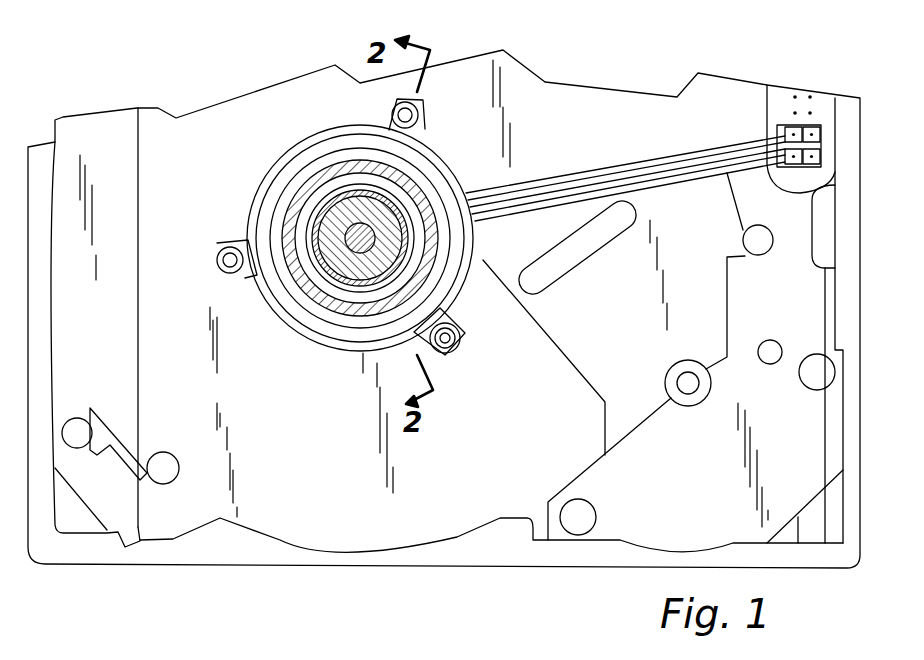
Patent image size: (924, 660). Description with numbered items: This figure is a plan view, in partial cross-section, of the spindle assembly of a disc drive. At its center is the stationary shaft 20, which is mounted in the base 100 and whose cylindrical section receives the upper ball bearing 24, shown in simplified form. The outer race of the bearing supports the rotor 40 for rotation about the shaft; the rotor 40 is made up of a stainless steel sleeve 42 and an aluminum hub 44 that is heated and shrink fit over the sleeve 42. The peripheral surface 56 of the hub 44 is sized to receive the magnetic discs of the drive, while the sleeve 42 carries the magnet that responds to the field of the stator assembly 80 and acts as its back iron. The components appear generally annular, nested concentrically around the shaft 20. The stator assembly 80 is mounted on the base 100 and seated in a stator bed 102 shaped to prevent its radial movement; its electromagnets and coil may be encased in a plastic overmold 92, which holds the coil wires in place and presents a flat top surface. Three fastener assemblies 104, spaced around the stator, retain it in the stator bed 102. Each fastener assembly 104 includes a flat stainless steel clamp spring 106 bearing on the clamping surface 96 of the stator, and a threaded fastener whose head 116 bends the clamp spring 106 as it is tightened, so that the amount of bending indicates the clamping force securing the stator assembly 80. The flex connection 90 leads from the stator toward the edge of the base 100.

The stationary shaft 20 is at (375, 221).
The upper ball bearing 24 is at (350, 200).
The rotor 40 is at (430, 181).
The sleeve 42 is at (318, 186).
The hub 44 is at (297, 202).
The peripheral surface 56 is at (287, 275).
The stator assembly 80 is at (330, 242).
The flex circuit cable 90 is at (528, 181).
The overmold 92 is at (288, 312).
The clamping surface 96 is at (437, 148).
The base 100 is at (190, 282).
The stator bed 102 is at (258, 198).
The fastener assembly 104 is at (430, 104).
The clamp spring 106 is at (452, 316).
The head 116 is at (450, 354).